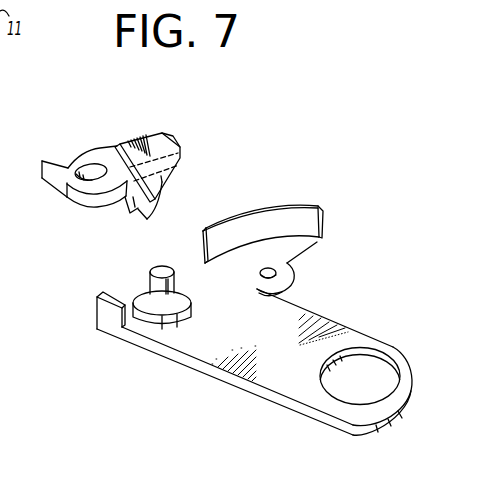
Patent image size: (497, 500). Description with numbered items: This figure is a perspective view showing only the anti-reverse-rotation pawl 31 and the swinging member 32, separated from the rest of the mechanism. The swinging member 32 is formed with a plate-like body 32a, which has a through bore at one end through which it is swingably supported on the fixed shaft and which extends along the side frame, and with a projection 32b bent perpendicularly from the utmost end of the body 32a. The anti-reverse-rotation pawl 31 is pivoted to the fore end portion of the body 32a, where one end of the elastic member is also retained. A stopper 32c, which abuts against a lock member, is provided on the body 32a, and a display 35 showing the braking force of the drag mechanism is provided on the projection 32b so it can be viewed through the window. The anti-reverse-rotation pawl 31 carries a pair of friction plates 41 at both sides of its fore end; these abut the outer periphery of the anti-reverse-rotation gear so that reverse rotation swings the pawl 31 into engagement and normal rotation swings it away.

The anti-reverse-rotation pawl 31 is at (96, 148).
The friction plates 41 is at (131, 205).
The display 35 is at (242, 221).
The swinging member 32 is at (183, 363).
The plate-like body 32a is at (293, 392).
The projection 32b is at (294, 207).
The stopper 32c is at (102, 312).